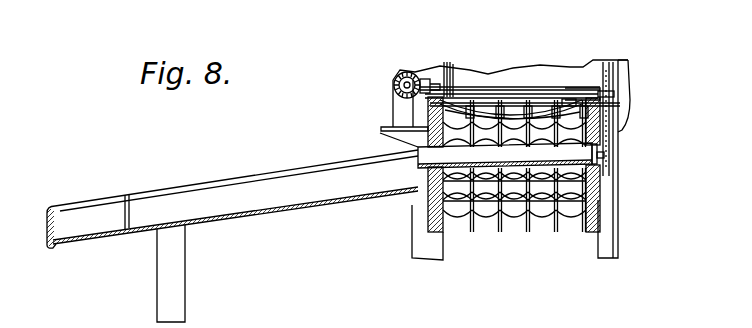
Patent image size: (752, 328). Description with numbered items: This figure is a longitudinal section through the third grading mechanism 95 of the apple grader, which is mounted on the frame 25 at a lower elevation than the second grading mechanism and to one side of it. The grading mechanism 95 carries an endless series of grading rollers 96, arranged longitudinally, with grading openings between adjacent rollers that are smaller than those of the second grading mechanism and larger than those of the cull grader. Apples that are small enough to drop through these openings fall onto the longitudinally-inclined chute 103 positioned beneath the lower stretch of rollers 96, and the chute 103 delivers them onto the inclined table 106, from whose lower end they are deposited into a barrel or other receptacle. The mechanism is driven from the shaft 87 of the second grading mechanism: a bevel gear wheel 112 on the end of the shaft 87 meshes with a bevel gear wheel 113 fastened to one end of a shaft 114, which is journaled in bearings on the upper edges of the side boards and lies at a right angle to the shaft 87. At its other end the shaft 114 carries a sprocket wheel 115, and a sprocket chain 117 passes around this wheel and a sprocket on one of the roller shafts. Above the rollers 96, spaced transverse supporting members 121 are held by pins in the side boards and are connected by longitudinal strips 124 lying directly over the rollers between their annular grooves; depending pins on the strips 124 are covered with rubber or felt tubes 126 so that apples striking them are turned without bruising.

The frame 25 is at (444, 250).
The shaft 87 is at (398, 96).
The third grading mechanism 95 is at (543, 102).
The grading rollers 96 is at (527, 218).
The longitudinally-inclined chute 103 is at (507, 88).
The inclined table 106 is at (293, 207).
The bevel gear wheel 112 is at (394, 84).
The bevel gear wheel 113 is at (422, 80).
The shaft 114 is at (457, 88).
The sprocket wheel 115 is at (612, 80).
The sprocket chain 117 is at (620, 110).
The transverse supporting members 121 is at (568, 100).
The longitudinal strips 124 is at (472, 100).
The tubes 126 is at (518, 100).